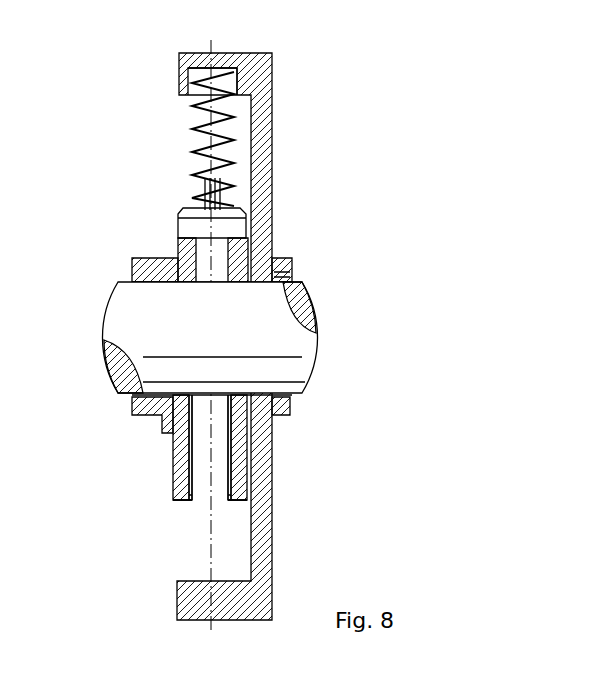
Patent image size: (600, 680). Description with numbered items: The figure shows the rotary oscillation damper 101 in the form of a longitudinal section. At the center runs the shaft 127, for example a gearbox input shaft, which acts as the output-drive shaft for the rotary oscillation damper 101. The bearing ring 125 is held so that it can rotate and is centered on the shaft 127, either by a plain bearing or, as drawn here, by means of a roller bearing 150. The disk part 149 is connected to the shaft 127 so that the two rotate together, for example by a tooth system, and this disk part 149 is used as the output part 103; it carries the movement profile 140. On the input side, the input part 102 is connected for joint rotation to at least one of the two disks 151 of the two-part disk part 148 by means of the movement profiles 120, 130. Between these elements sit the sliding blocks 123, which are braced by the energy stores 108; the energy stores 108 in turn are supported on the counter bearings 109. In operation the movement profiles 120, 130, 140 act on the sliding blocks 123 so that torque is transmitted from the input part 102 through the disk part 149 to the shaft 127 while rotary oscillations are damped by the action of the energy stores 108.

The rotary oscillation damper 101 is at (252, 323).
The input part 102 is at (137, 267).
The output part 103 is at (175, 442).
The energy stores 108 is at (190, 152).
The counter bearings 109 is at (187, 78).
The movement profile 120 is at (175, 478).
The sliding blocks 123 is at (178, 228).
The bearing ring 125 is at (262, 195).
The shaft 127 is at (236, 327).
The movement profile 130 is at (243, 442).
The movement profile 140 is at (232, 482).
The two-part disk part 148 is at (232, 507).
The disk part 149 is at (200, 456).
The roller bearing 150 is at (265, 278).
The disks 151 is at (175, 497).